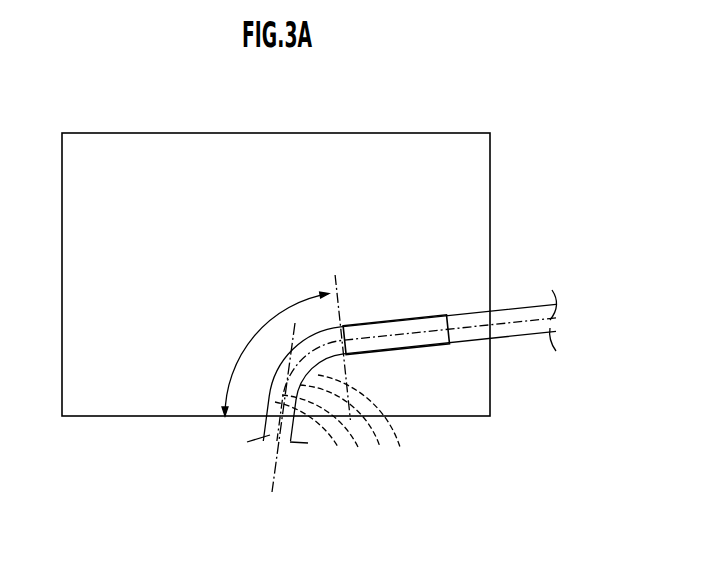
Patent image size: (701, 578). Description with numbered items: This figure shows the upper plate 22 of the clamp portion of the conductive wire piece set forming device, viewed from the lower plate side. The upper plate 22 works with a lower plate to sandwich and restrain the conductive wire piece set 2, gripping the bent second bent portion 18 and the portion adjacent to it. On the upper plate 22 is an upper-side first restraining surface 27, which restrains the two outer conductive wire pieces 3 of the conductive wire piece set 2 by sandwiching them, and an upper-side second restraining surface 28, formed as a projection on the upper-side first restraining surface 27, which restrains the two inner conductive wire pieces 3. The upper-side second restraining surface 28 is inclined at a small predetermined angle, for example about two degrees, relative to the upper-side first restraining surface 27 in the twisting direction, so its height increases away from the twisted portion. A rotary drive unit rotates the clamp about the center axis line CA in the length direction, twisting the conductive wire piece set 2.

The upper plate 22 is at (455, 195).
The upper-side first restraining surface 27 is at (475, 305).
The upper-side second restraining surface 28 is at (440, 342).
The second bent portion 18 is at (262, 332).
The center axis line CA is at (270, 489).
The conductive wire piece set 2 is at (346, 446).
The conductive wire pieces 3 is at (417, 478).